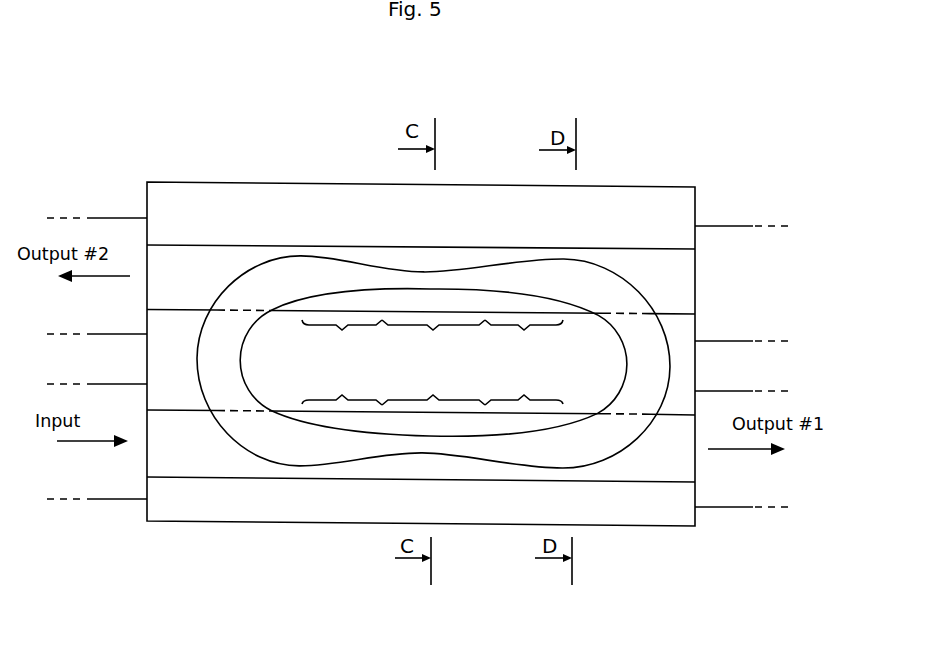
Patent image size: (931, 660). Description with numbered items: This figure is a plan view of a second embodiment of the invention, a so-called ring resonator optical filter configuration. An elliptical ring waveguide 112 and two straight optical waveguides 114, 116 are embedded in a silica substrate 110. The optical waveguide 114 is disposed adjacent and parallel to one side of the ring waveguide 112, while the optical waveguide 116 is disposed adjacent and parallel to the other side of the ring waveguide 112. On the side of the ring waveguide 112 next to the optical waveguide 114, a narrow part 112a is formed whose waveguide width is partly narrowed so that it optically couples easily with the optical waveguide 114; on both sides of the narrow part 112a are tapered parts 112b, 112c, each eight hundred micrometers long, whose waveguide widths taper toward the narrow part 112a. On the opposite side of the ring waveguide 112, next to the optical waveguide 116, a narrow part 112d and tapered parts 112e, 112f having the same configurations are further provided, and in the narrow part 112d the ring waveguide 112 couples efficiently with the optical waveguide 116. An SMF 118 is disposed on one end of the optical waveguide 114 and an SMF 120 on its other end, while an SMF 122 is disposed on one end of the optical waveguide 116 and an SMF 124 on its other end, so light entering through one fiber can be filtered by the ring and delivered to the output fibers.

The silica substrate 110 is at (687, 221).
The ring waveguide 112 is at (322, 270).
The narrow part 112a is at (433, 389).
The tapered part 112b is at (342, 389).
The tapered part 112c is at (524, 389).
The narrow part 112d is at (433, 338).
The tapered part 112e is at (342, 338).
The tapered part 112f is at (524, 338).
The optical waveguide 114 is at (190, 451).
The optical waveguide 116 is at (204, 268).
The SMF 118 is at (108, 479).
The SMF 120 is at (712, 485).
The SMF 122 is at (124, 231).
The SMF 124 is at (728, 252).